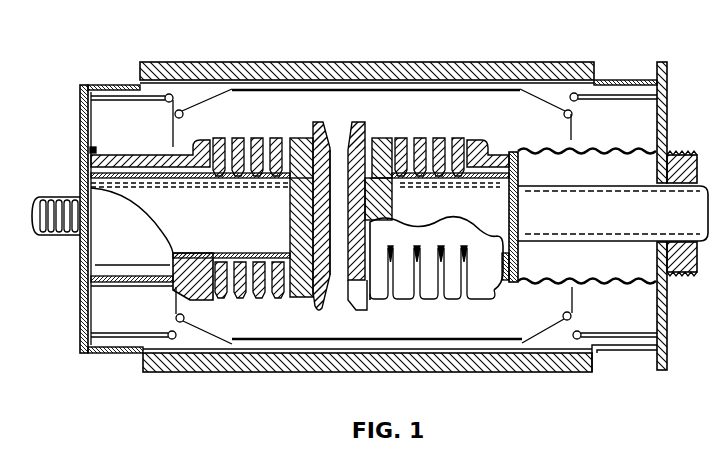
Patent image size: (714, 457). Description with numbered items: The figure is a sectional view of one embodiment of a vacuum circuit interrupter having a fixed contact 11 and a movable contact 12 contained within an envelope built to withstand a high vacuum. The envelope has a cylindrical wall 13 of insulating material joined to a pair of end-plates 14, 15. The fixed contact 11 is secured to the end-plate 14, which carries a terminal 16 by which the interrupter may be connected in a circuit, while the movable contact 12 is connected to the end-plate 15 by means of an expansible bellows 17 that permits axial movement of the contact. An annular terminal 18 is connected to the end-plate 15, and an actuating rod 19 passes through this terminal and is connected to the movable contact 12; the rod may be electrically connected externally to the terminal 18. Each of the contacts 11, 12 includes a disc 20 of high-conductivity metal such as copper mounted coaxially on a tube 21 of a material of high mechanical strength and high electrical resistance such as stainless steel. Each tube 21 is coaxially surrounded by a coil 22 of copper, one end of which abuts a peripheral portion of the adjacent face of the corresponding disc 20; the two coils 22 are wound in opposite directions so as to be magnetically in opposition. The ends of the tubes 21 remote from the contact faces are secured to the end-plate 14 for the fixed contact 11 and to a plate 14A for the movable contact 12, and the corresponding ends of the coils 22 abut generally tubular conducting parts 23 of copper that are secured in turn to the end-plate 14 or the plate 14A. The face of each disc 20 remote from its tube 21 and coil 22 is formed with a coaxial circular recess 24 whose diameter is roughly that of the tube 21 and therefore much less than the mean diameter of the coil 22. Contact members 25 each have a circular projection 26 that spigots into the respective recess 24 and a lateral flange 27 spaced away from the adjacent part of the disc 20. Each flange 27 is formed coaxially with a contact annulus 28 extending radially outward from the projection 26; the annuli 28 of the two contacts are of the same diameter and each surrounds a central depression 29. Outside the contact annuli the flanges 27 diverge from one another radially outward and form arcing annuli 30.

The fixed contact 11 is at (243, 304).
The movable contact 12 is at (450, 301).
The cylindrical wall 13 is at (463, 62).
The end-plate 14 is at (82, 112).
The plate 14A is at (519, 262).
The end-plate 15 is at (668, 128).
The terminal 16 is at (53, 237).
The expansible bellows 17 is at (590, 148).
The annular terminal 18 is at (681, 276).
The actuating rod 19 is at (629, 215).
The disc 20 is at (300, 140).
The tube 21 is at (188, 252).
The coil 22 is at (221, 139).
The tubular conducting part 23 is at (139, 154).
The circular recess 24 is at (298, 227).
The contact member 25 is at (328, 122).
The circular projection 26 is at (300, 200).
The lateral flange 27 is at (320, 291).
The contact annulus 28 is at (325, 283).
The central depression 29 is at (356, 200).
The arcing annulus 30 is at (327, 292).